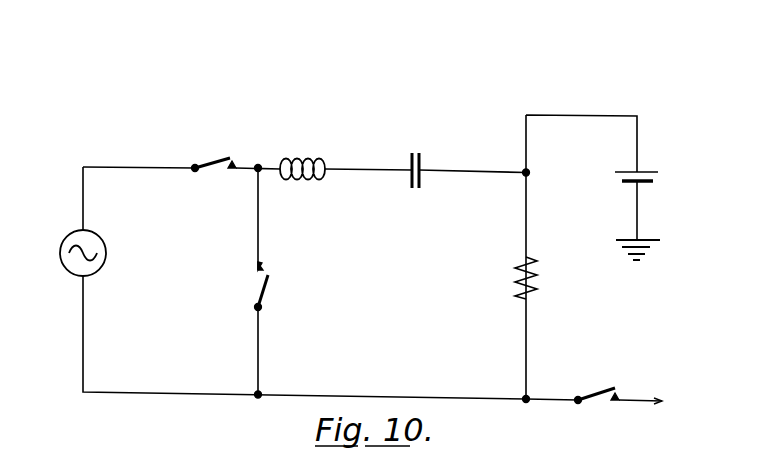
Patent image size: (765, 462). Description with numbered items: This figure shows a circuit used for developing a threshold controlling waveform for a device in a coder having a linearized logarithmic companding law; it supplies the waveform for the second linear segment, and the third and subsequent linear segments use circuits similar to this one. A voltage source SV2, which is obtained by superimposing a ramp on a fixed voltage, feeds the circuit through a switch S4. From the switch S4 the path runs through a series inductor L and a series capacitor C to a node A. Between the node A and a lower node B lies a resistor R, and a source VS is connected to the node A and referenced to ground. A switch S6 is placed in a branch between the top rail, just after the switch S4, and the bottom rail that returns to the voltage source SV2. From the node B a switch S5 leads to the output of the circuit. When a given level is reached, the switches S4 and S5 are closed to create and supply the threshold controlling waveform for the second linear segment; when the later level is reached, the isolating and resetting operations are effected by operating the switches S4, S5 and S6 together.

The voltage source SV2 is at (106, 256).
The switch S4 is at (209, 160).
The inductor L is at (300, 158).
The capacitor C is at (421, 166).
The node A is at (529, 173).
The voltage source battery VS is at (640, 171).
The switch S6 is at (265, 290).
The resistor R is at (537, 274).
The node B is at (524, 403).
The switch S5 is at (600, 395).